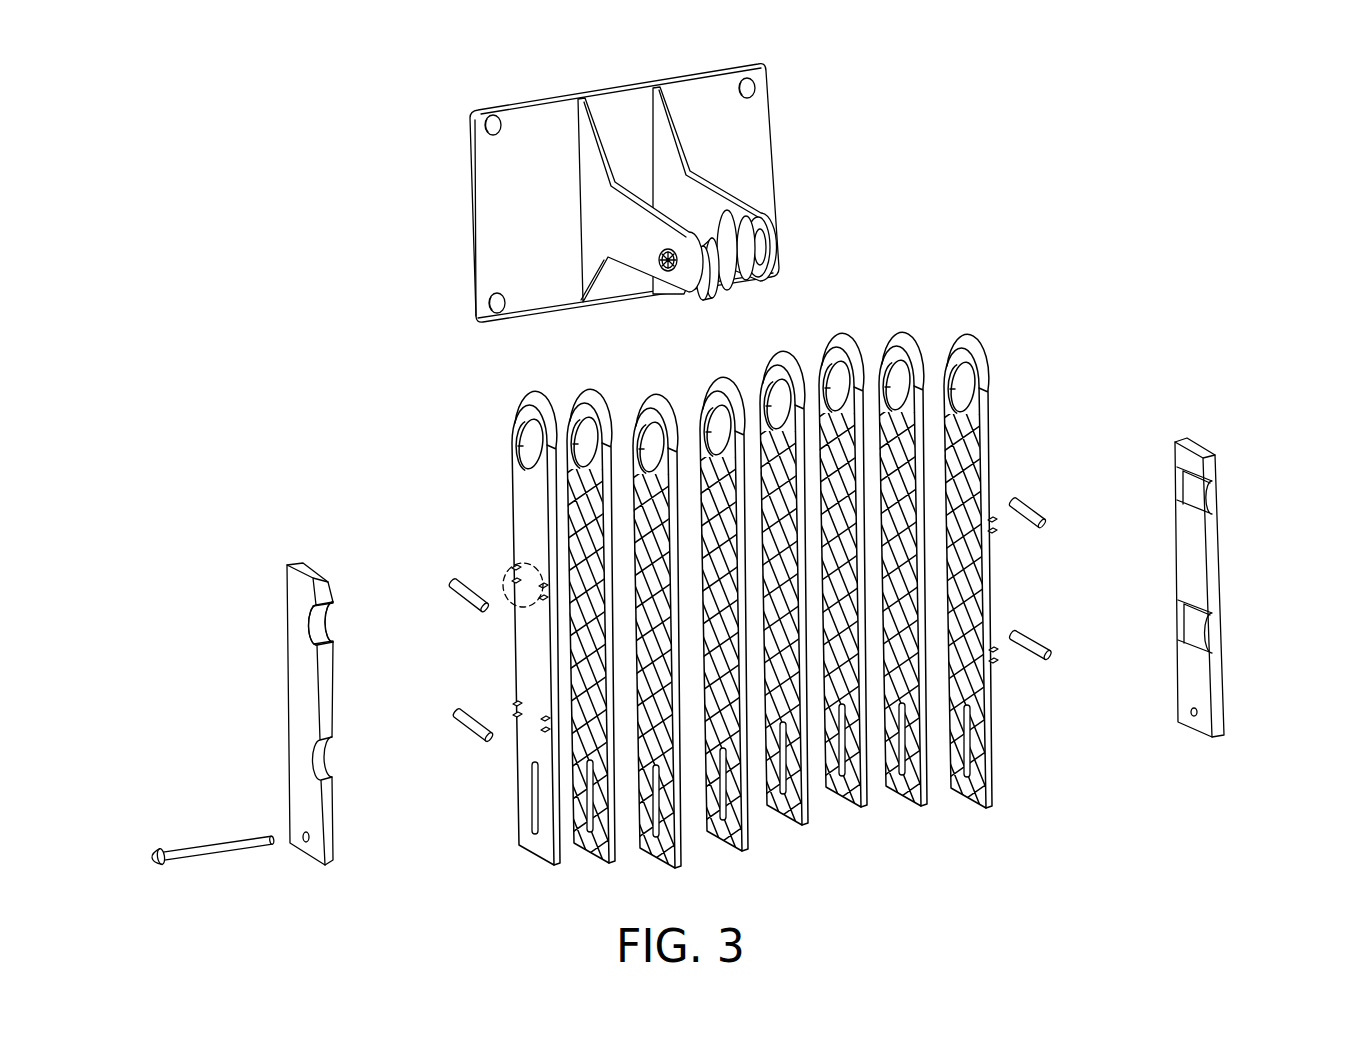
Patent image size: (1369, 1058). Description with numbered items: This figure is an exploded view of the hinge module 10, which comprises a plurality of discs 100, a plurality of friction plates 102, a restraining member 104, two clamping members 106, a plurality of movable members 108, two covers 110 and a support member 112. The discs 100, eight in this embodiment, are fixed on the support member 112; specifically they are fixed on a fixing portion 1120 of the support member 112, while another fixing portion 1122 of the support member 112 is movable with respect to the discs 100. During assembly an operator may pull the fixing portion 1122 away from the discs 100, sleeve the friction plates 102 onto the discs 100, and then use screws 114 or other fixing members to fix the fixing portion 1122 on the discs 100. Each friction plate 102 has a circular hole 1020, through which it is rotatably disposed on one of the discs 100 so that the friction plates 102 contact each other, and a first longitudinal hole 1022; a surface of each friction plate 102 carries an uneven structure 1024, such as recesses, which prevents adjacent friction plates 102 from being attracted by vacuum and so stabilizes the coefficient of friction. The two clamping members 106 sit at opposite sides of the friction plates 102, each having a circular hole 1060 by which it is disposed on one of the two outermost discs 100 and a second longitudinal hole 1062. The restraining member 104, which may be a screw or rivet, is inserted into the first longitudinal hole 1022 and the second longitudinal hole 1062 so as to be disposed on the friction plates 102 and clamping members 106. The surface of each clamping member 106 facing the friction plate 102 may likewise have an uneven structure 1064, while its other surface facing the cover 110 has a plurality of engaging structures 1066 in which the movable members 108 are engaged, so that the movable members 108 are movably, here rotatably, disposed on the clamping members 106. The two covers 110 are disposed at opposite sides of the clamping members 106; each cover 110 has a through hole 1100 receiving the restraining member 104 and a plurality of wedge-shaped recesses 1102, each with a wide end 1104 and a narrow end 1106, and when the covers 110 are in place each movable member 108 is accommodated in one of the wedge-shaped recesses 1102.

The hinge module 10 is at (732, 489).
The disc 100 is at (730, 287).
The friction plate 102 is at (923, 566).
The circular hole 1020 is at (868, 336).
The first longitudinal hole 1022 is at (908, 797).
The uneven structure 1024 is at (923, 578).
The restraining member 104 is at (221, 842).
The clamping member 106 is at (801, 599).
The circular hole 1060 is at (485, 425).
The second longitudinal hole 1062 is at (480, 791).
The uneven structure 1064 is at (988, 601).
The engaging structure 1066 is at (486, 623).
The movable member 108 is at (471, 596).
The cover 110 is at (750, 689).
The through hole 1100 is at (303, 857).
The wedge-shaped recess 1102 is at (308, 630).
The wide end 1104 is at (318, 600).
The narrow end 1106 is at (320, 638).
The support member 112 is at (508, 98).
The fixing portion 1120 is at (718, 187).
The fixing portion 1122 is at (627, 252).
The screw 114 is at (663, 263).